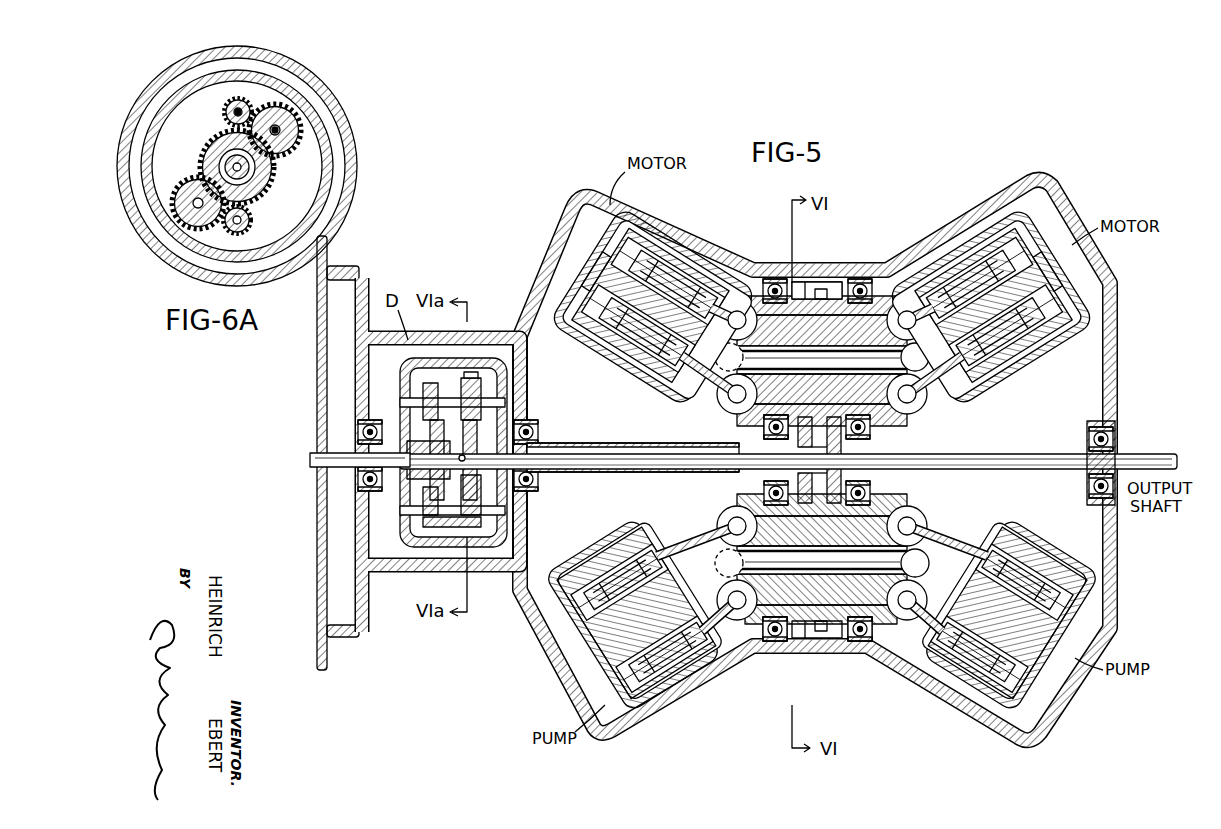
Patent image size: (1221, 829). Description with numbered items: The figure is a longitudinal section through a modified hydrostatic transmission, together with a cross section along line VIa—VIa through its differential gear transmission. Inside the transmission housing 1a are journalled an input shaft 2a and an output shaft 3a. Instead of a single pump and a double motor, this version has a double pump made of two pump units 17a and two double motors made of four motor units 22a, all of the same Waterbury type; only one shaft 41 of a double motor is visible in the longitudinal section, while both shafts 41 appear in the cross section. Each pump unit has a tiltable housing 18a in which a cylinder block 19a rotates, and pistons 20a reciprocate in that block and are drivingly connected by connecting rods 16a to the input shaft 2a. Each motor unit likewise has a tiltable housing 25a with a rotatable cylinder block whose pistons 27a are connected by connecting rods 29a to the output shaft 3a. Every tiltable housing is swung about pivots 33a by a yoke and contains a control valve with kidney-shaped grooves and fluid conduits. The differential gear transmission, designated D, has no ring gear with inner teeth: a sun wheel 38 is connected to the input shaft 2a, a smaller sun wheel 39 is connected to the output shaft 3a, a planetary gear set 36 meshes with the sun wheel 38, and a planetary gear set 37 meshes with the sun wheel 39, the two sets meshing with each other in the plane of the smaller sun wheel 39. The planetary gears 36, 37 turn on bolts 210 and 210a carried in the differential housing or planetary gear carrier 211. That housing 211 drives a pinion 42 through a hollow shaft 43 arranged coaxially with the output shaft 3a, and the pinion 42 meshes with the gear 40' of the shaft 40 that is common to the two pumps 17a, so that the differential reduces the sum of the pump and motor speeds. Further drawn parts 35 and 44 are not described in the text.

In FIG. 5, the transmission housing 1a is at (606, 186).
In FIG. 5, the input shaft 2a is at (310, 460).
In FIG. 6A, the output shaft 3a is at (246, 167).
In FIG. 5, the output shaft 3a is at (1142, 456).
In FIG. 5, the connecting rods 16a is at (690, 555).
In FIG. 5, the pump unit 17a is at (595, 680).
In FIG. 5, the tiltable housing 18a is at (585, 620).
In FIG. 5, the cylinder block 19a is at (610, 575).
In FIG. 5, the pistons 20a is at (680, 548).
In FIG. 5, the motor unit 22a is at (612, 212).
In FIG. 5, the tiltable housing 25a is at (583, 270).
In FIG. 5, the pistons 27a is at (655, 250).
In FIG. 5, the connecting rods 29a is at (740, 300).
In FIG. 5, the pivots 33a is at (733, 398).
In FIG. 5, the intermediate gear housing 35 is at (516, 418).
In FIG. 6A, the planetary gear set 36 is at (224, 118).
In FIG. 5, the planetary gear set 36 is at (430, 383).
In FIG. 6A, the planetary gear set 37 is at (301, 118).
In FIG. 5, the planetary gear set 37 is at (470, 378).
In FIG. 6A, the sun wheel 38 is at (268, 178).
In FIG. 5, the sun wheel 38 is at (430, 480).
In FIG. 6A, the sun wheel 39 is at (212, 166).
In FIG. 5, the sun wheel 39 is at (477, 480).
In FIG. 5, the shaft 40 is at (847, 646).
In FIG. 5, the gear 40' is at (794, 655).
In FIG. 5, the shaft 41 is at (822, 282).
In FIG. 5, the pinion 42 is at (766, 428).
In FIG. 5, the hollow shaft 43 is at (626, 442).
In FIG. 5, the coupling 44 is at (845, 470).
In FIG. 6A, the bolts 210 is at (241, 111).
In FIG. 5, the bolts 210 is at (404, 402).
In FIG. 6A, the bolts 210a is at (278, 128).
In FIG. 5, the bolts 210a is at (404, 512).
In FIG. 6A, the differential housing 211 is at (335, 163).
In FIG. 5, the differential housing 211 is at (418, 542).